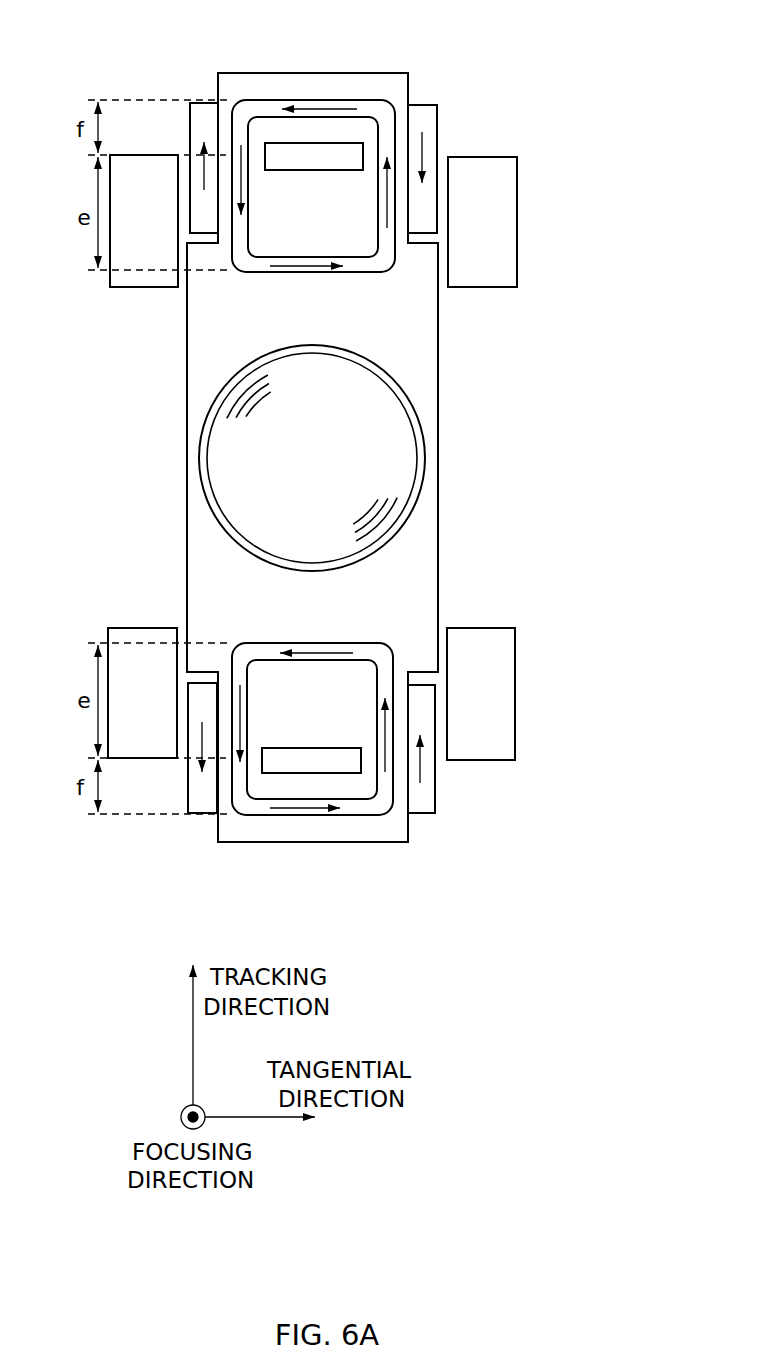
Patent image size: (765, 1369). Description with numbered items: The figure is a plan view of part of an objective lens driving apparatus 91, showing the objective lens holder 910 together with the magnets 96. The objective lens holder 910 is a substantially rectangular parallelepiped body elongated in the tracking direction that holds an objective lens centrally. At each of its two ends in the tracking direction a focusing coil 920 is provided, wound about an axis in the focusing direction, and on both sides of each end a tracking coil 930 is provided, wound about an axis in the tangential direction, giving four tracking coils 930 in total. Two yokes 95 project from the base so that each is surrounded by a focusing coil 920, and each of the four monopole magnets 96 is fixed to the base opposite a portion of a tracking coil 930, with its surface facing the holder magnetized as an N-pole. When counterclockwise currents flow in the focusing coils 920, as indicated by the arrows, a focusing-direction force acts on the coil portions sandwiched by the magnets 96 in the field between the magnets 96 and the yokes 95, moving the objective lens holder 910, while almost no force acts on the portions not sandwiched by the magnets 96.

The objective lens driving apparatus 91 is at (158, 415).
The yoke 95 is at (327, 143).
The magnet 96 is at (138, 155).
The objective lens holder 910 is at (464, 383).
The focusing coil 920 is at (298, 100).
The tracking coil 930 is at (202, 103).